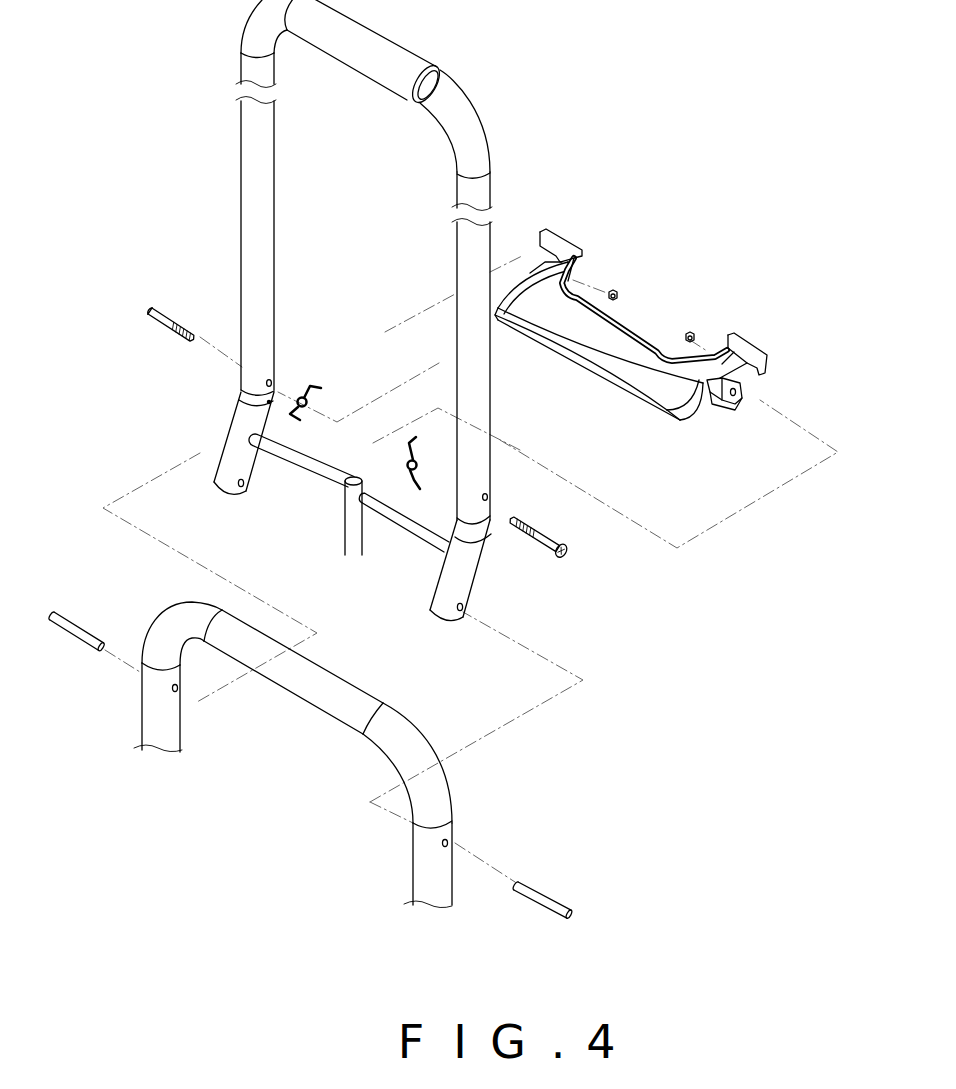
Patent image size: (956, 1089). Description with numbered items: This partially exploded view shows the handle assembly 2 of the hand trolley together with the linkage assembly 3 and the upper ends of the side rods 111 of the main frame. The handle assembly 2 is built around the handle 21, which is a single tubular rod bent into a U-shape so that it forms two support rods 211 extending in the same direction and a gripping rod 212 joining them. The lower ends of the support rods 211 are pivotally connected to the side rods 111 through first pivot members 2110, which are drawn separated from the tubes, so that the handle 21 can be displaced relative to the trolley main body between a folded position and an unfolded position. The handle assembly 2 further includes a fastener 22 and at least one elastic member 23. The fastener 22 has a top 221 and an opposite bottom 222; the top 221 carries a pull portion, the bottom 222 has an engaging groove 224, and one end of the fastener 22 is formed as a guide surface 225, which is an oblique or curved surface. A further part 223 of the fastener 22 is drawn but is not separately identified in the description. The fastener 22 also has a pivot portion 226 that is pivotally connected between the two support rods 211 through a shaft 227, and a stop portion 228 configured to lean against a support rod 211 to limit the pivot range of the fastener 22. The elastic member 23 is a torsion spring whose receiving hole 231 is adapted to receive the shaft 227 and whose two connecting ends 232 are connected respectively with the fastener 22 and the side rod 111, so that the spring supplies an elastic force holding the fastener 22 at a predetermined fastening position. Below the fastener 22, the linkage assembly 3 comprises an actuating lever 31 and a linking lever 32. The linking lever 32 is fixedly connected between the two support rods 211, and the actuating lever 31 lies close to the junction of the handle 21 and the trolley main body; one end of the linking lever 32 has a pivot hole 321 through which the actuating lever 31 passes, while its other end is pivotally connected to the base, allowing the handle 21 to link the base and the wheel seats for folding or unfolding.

The handle assembly 2 is at (212, 58).
The handle 21 is at (530, 35).
The support rods 211 is at (493, 185).
The gripping rod 212 is at (443, 88).
The fastener 22 is at (700, 313).
The top 221 is at (605, 360).
The bottom 222 is at (720, 400).
The rail 223 is at (640, 333).
The engaging groove 224 is at (690, 403).
The guide surface 225 is at (690, 405).
The pivot portion 226 is at (733, 383).
The shaft 227 is at (158, 310).
The stop portion 228 is at (550, 233).
The elastic member 23 is at (298, 388).
The receiving hole 231 is at (310, 402).
The connecting ends 232 is at (310, 387).
The linkage assembly 3 is at (270, 530).
The actuating lever 31 is at (307, 475).
The linking lever 32 is at (352, 535).
The pivot hole 321 is at (362, 500).
The side rods 111 is at (155, 723).
The first pivot members 2110 is at (80, 622).